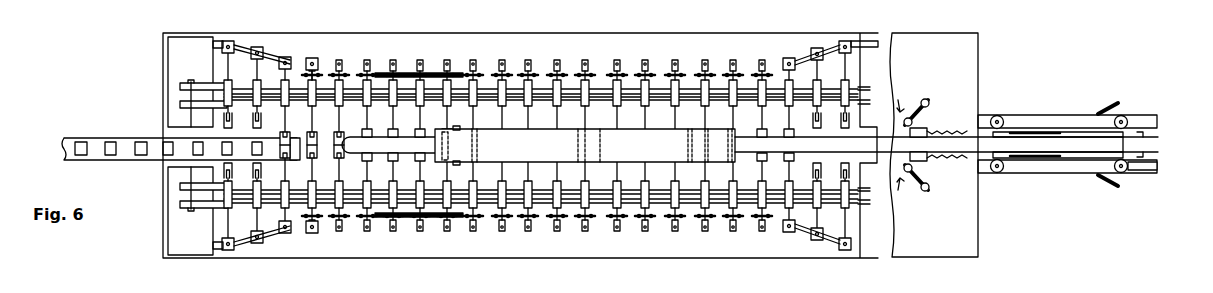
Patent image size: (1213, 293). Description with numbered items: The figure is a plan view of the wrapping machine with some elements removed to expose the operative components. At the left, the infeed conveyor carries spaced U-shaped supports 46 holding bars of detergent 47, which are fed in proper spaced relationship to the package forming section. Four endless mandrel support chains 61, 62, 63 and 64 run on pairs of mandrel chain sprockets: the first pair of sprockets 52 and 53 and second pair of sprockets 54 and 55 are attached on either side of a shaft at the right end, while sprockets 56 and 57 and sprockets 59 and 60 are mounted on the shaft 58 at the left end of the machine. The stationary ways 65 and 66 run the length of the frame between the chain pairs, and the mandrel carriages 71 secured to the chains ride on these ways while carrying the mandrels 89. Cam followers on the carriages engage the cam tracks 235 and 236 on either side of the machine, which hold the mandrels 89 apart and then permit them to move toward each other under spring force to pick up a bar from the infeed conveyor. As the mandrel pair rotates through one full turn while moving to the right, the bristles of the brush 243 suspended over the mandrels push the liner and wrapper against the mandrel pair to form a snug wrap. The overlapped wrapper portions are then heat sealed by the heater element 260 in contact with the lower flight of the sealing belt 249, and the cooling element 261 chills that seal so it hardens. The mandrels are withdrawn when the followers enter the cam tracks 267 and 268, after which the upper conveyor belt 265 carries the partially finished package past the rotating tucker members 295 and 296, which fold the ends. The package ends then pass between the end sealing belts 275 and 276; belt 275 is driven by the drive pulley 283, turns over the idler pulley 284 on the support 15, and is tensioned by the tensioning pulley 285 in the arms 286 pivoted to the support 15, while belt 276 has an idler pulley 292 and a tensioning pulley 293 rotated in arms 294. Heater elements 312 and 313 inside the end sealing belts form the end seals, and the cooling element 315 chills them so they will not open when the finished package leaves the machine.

The support 15 is at (1085, 168).
The supports 46 is at (95, 160).
The bars of detergent 47 is at (83, 138).
The mandrel chain sprocket 52 is at (862, 225).
The mandrel chain sprocket 53 is at (864, 191).
The mandrel chain sprocket 54 is at (870, 94).
The mandrel chain sprocket 55 is at (862, 88).
The mandrel chain sprocket 56 is at (190, 209).
The mandrel chain sprocket 57 is at (187, 187).
The shaft 58 is at (188, 198).
The mandrel chain sprocket 59 is at (163, 88).
The mandrel chain sprocket 60 is at (163, 48).
The mandrel support chain 61 is at (488, 208).
The mandrel support chain 62 is at (485, 184).
The mandrel support chain 63 is at (352, 106).
The mandrel support chain 64 is at (350, 80).
The stationary way 65 is at (550, 203).
The stationary way 66 is at (544, 90).
The mandrel carriage 71 is at (255, 107).
The mandrel 89 is at (230, 124).
The cam track 235 is at (240, 250).
The cam track 236 is at (240, 42).
The brush 243 is at (403, 142).
The sealing belt 249 is at (715, 140).
The heater element 260 is at (508, 138).
The cooling element 261 is at (595, 138).
The upper conveyor belt 265 is at (943, 109).
The cam track 267 is at (830, 248).
The cam track 268 is at (797, 58).
The end sealing belt 275 is at (1065, 174).
The end sealing belt 276 is at (1067, 117).
The drive pulley 283 is at (1157, 167).
The idler pulley 284 is at (997, 173).
The tensioning pulley 285 is at (1121, 172).
The arms 286 is at (1102, 183).
The idler pulley 292 is at (997, 116).
The tensioning pulley 293 is at (1123, 107).
The arms 294 is at (1115, 103).
The rotating tucker member 295 is at (920, 182).
The rotating tucker member 296 is at (913, 101).
The heater element 312 is at (1037, 162).
The heater element 313 is at (1025, 120).
The cooling element 315 is at (1060, 132).